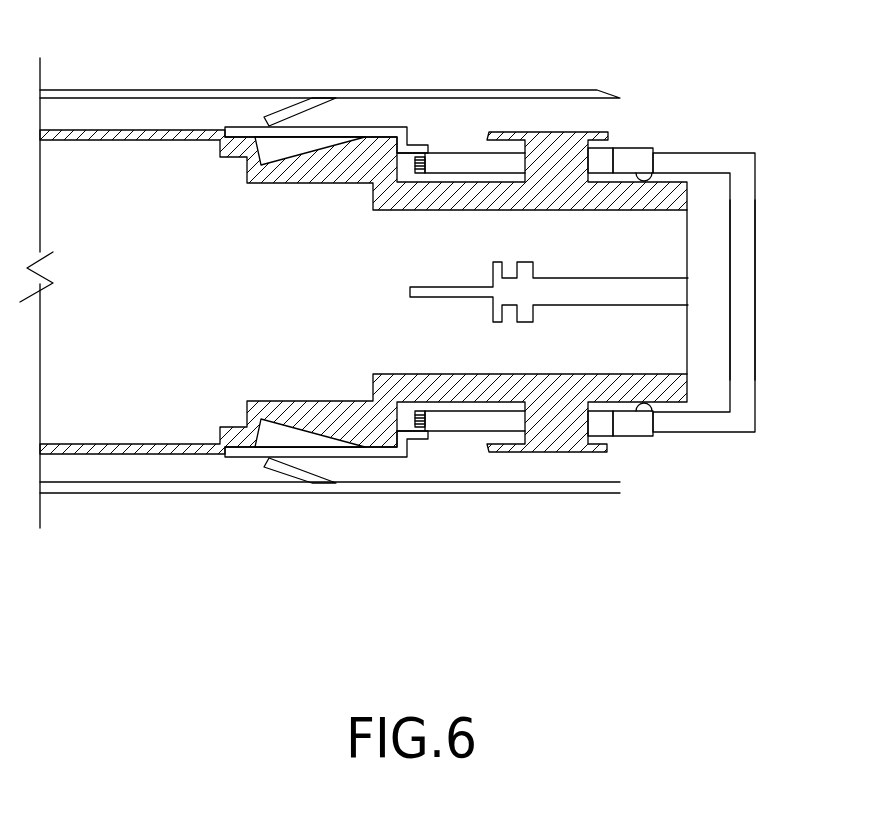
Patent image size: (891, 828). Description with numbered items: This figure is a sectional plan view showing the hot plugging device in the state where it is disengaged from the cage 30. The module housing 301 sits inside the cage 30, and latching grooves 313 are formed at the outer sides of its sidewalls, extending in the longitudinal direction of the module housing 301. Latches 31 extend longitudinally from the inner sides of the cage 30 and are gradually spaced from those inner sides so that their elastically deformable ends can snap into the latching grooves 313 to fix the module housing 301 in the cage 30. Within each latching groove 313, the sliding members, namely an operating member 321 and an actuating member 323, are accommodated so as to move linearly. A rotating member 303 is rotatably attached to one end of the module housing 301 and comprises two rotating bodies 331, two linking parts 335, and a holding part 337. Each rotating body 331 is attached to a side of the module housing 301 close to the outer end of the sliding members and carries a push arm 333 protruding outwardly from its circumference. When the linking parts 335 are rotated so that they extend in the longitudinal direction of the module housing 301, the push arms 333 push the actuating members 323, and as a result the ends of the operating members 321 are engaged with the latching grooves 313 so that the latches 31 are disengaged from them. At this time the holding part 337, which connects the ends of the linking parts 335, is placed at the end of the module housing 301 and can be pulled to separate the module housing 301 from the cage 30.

The cage 30 is at (180, 90).
The module housing 301 is at (140, 447).
The rotating member 303 is at (808, 115).
The latch 31 is at (298, 100).
The latching groove 313 is at (262, 150).
The operating member 321 is at (365, 128).
The actuating member 323 is at (462, 160).
The rotating body 331 is at (647, 160).
The push arm 333 is at (603, 160).
The linking part 335 is at (715, 153).
The holding part 337 is at (752, 252).